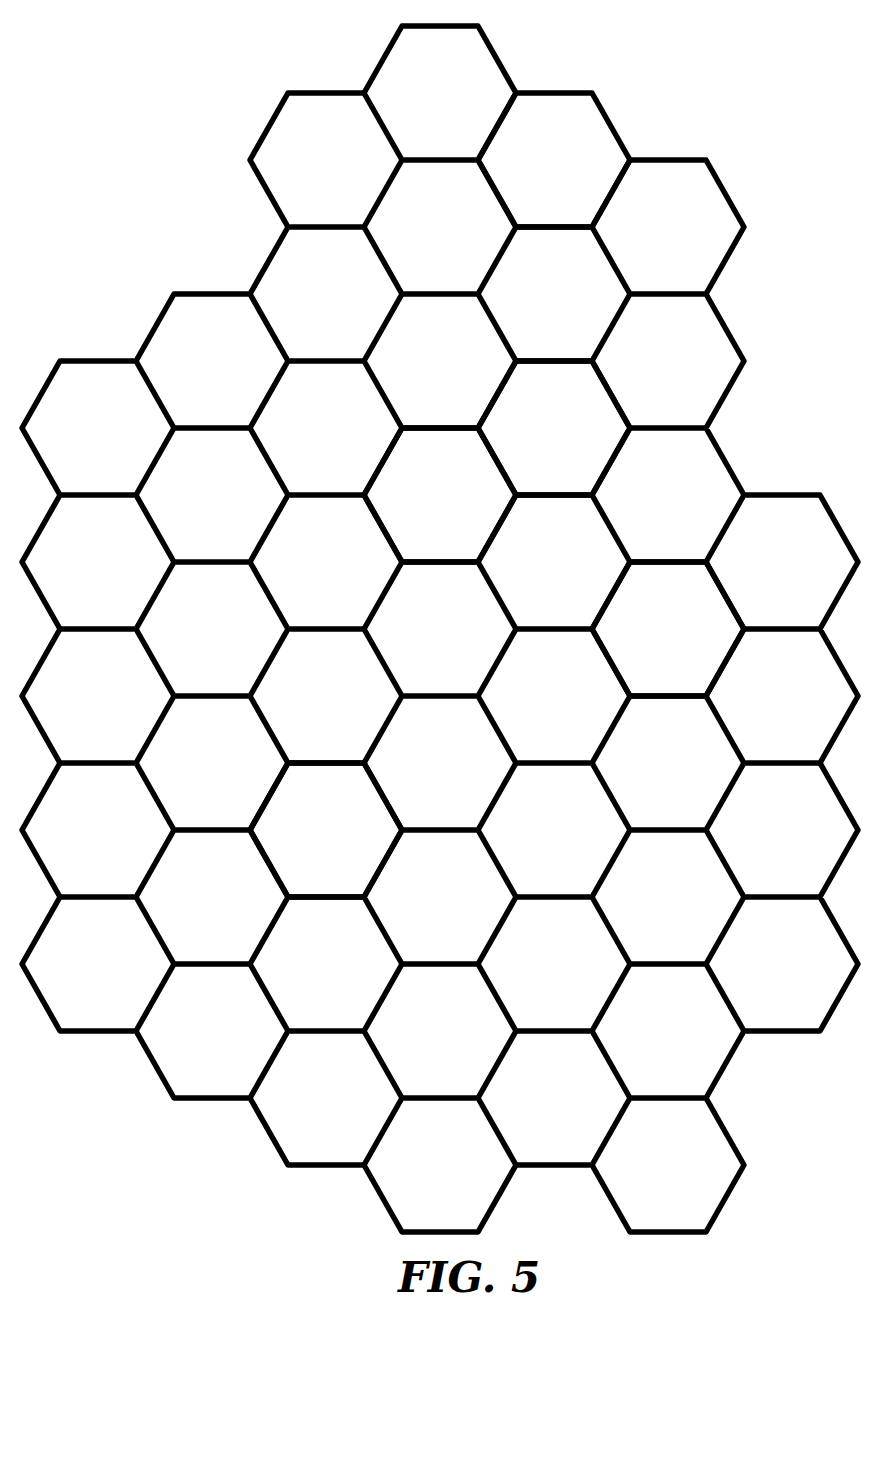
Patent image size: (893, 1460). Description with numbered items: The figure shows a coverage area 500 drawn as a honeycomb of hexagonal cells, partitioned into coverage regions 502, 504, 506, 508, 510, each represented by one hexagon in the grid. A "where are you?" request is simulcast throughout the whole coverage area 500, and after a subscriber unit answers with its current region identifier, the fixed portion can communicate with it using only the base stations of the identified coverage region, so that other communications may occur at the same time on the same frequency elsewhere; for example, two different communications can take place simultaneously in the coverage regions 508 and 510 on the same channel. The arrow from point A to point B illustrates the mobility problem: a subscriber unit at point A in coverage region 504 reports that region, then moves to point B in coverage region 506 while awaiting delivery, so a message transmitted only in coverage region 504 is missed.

The coverage area 500 is at (440, 629).
The coverage region 502 is at (559, 155).
The coverage region 504 is at (518, 407).
The coverage region 506 is at (408, 463).
The coverage region 508 is at (642, 607).
The coverage region 510 is at (298, 803).
The point A is at (448, 498).
The point B is at (431, 502).